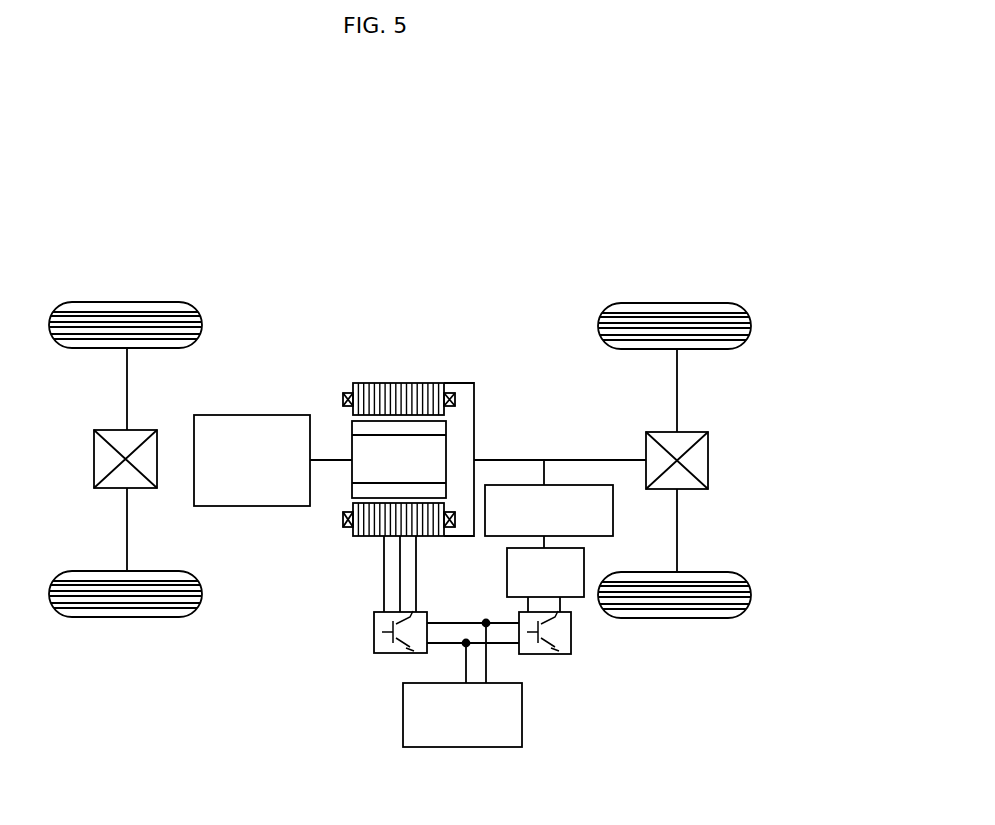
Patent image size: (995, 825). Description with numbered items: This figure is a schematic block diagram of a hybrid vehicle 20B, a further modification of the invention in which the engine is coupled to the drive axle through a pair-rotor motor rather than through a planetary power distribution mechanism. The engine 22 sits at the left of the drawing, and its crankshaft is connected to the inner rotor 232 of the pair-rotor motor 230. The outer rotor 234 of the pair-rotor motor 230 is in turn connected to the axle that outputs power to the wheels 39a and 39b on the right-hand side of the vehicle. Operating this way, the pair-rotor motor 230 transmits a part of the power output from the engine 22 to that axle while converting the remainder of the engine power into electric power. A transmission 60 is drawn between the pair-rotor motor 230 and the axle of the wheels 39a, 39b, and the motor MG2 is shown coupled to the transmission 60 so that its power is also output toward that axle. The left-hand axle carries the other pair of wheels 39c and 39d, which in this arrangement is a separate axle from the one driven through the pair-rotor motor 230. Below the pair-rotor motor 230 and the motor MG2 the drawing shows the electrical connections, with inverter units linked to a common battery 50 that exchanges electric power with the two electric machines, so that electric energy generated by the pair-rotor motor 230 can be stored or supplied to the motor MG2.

The hybrid vehicle 20B is at (501, 232).
The engine 22 is at (253, 506).
The pair-rotor motor 230 is at (392, 386).
The inner rotor 232 is at (352, 447).
The outer rotor 234 is at (417, 382).
The wheel 39a is at (678, 303).
The wheel 39b is at (678, 618).
The wheel 39c is at (127, 302).
The wheel 39d is at (127, 617).
The battery 50 is at (522, 718).
The transmission 60 is at (613, 512).
The motor MG2 is at (507, 573).